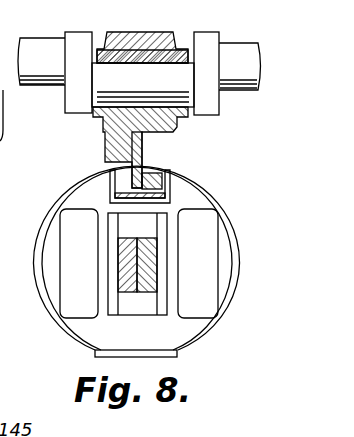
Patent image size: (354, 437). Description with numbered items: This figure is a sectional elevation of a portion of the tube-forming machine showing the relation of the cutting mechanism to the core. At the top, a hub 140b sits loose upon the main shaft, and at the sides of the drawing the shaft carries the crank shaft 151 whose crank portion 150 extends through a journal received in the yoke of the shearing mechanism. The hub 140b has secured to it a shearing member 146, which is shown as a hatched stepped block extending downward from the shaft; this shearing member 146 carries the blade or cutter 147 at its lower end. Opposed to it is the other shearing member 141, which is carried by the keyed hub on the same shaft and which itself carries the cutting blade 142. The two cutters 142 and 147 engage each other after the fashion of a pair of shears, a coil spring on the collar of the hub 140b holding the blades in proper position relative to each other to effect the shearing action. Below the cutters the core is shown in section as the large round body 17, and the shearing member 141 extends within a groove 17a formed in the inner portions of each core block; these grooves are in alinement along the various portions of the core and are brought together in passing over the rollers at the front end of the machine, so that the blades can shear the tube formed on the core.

The crank shaft 151 is at (41, 48).
The crank portion 150 is at (182, 90).
The hub 140b is at (126, 36).
The shearing member 146 is at (105, 137).
The cutting blade 142 is at (143, 175).
The shearing member 141 is at (170, 172).
The blade or cutter 147 is at (144, 187).
The groove 17a is at (165, 200).
The flywheel 17 is at (47, 265).